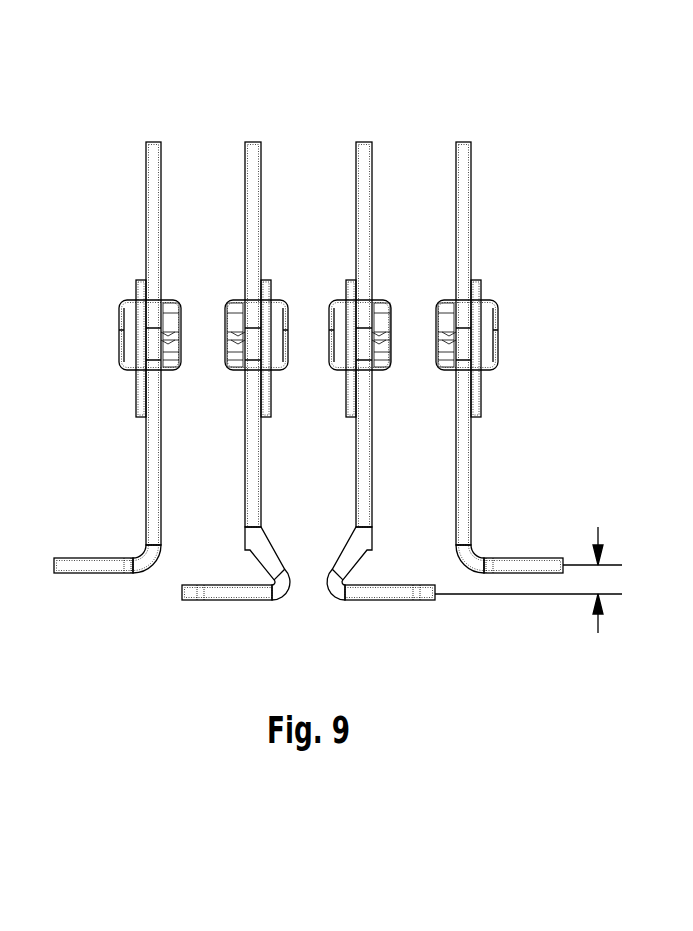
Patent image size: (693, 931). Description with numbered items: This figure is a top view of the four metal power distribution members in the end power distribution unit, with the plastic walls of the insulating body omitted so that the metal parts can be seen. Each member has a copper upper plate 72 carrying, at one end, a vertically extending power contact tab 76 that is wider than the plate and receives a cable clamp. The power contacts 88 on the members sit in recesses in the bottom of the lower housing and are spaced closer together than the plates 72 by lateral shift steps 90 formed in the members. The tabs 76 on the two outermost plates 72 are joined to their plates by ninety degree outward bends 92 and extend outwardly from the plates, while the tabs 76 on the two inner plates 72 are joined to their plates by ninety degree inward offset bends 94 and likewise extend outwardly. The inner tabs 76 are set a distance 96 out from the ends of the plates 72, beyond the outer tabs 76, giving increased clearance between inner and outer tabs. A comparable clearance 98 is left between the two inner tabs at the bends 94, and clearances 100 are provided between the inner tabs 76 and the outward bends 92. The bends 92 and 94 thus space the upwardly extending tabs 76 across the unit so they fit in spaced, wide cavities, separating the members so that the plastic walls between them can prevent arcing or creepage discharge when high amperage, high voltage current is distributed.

The upper plate 72 is at (245, 152).
The power contact tab 76 is at (82, 575).
The power contact 88 is at (181, 370).
The lateral shift step 90 is at (136, 392).
The outward bend 92 is at (152, 561).
The inward offset bend 94 is at (288, 576).
The distance 96 is at (598, 535).
The clearance 98 is at (310, 565).
The clearance 100 is at (168, 582).